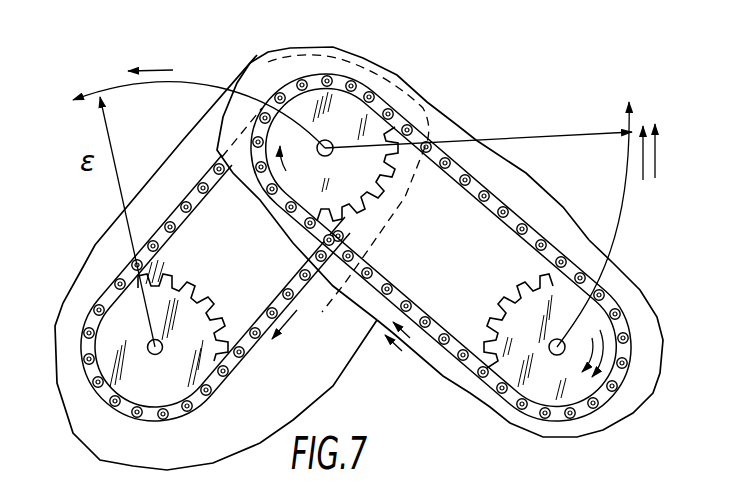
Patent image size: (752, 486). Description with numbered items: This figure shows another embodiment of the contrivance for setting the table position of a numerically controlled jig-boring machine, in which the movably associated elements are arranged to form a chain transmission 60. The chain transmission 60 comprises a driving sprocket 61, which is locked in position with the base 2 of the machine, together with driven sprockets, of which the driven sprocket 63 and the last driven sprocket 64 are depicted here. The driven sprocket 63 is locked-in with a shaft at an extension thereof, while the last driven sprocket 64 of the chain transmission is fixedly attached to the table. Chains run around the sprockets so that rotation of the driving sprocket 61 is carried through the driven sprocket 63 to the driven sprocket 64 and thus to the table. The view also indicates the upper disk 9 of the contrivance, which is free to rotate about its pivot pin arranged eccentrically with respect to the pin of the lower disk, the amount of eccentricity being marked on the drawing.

The base 2 is at (160, 258).
The upper disk 9 is at (528, 422).
The chain transmission 60 is at (177, 174).
The driving sprocket 61 is at (120, 320).
The driven sprocket 63 is at (350, 108).
The driven sprocket 64 is at (592, 318).